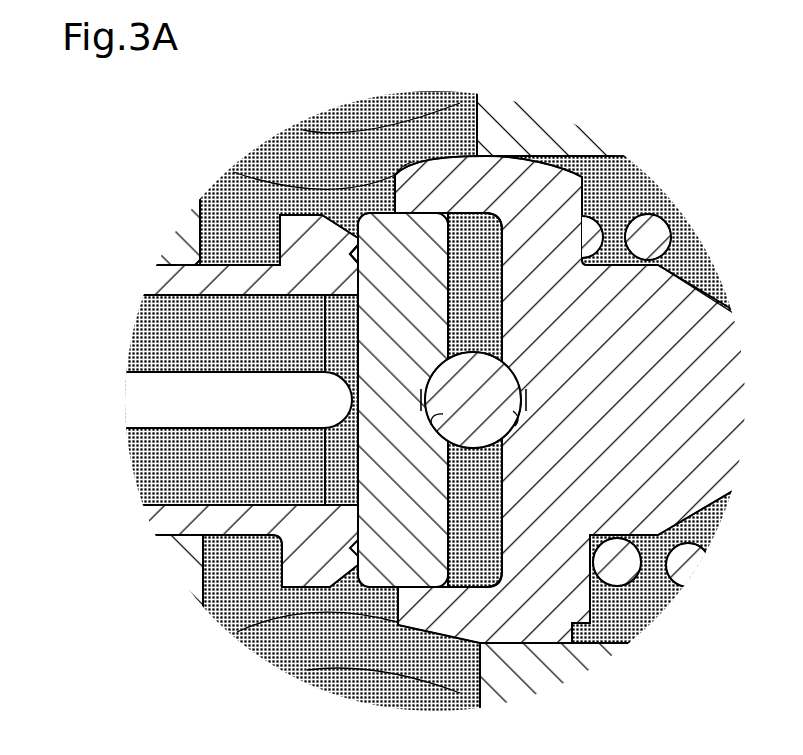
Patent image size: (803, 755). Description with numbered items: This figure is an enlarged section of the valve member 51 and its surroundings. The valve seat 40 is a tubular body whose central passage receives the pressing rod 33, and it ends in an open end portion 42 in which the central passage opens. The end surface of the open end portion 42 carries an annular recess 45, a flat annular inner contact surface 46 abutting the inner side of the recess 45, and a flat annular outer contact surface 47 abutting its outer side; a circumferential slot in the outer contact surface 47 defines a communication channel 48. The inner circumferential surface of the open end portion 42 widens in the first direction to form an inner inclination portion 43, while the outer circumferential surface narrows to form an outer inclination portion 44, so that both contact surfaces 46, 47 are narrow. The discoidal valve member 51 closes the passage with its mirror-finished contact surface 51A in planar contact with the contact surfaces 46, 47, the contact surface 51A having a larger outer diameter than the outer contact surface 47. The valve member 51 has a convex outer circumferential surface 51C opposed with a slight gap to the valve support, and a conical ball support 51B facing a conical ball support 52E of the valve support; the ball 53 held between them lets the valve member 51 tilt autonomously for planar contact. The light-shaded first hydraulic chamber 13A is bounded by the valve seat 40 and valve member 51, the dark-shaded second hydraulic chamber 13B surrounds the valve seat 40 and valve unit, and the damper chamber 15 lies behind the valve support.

The first hydraulic chamber 13A is at (157, 465).
The second hydraulic chamber 13B is at (240, 193).
The damper chamber 15 is at (623, 185).
The pressing rod 33 is at (150, 372).
The valve seat 40 is at (138, 251).
The open end portion 42 is at (294, 578).
The inner inclination portion 43 is at (340, 502).
The outer inclination portion 44 is at (341, 578).
The recess 45 is at (353, 256).
The inner contact surface 46 is at (358, 264).
The outer contact surface 47 is at (399, 215).
The communication channel 48 is at (373, 585).
The valve member 51 is at (453, 313).
The contact surface 51A is at (353, 458).
The ball support 51B is at (440, 418).
The convex outer circumferential surface 51C is at (388, 584).
The ball support 52E is at (514, 421).
The ball 53 is at (508, 383).